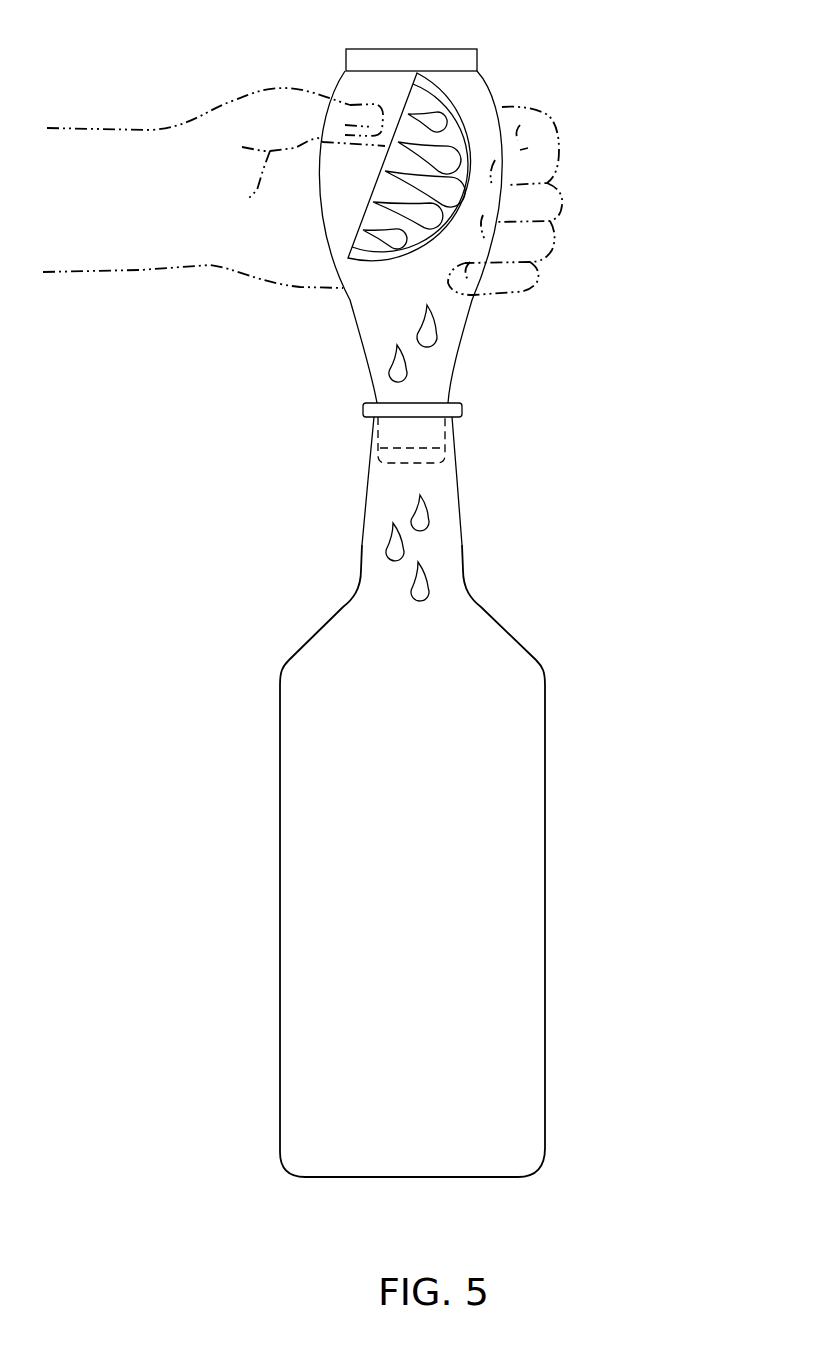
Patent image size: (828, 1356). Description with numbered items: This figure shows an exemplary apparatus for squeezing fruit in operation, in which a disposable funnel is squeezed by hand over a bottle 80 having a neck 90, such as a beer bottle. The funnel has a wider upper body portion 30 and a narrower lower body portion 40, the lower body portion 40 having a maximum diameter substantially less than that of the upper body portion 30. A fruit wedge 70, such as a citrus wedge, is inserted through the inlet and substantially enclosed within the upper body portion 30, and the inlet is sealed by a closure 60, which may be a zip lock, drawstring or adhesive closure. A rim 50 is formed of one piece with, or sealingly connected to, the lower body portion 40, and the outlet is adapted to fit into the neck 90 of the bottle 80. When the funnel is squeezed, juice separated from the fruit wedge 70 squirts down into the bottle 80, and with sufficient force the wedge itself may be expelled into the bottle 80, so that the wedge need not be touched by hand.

The upper body portion 30 is at (505, 127).
The closure 60 is at (442, 49).
The fruit wedge 70 is at (462, 105).
The lower body portion 40 is at (455, 373).
The rim 50 is at (410, 467).
The neck 90 is at (462, 518).
The bottle 80 is at (628, 762).